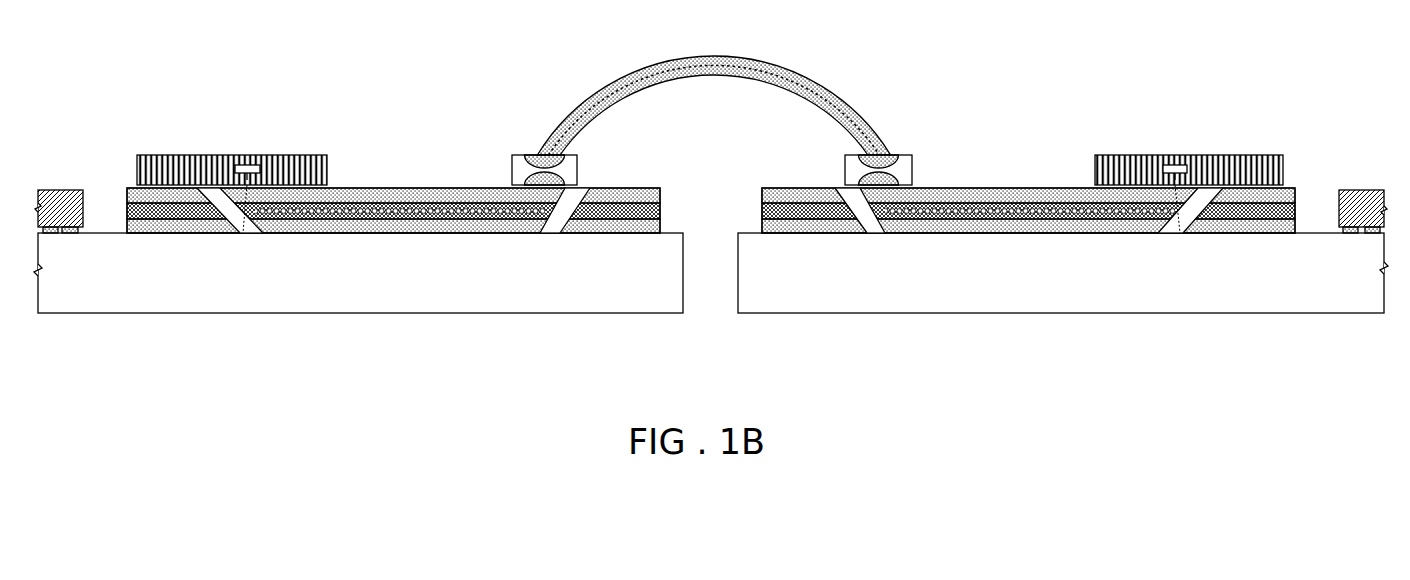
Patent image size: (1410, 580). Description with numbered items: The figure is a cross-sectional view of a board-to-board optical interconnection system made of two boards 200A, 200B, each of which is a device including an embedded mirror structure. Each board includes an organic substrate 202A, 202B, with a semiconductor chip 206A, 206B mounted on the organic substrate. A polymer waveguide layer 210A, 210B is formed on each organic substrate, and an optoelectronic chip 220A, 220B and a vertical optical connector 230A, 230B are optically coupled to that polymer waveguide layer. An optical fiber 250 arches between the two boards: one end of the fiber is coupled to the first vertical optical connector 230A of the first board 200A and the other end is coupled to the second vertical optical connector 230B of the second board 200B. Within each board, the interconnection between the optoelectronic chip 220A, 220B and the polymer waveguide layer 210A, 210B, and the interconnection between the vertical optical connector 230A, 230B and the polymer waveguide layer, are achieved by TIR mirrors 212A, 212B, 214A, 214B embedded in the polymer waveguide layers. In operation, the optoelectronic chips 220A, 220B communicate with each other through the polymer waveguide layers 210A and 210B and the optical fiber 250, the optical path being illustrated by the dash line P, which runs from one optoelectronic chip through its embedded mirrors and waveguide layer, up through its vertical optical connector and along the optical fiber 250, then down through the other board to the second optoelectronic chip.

The first board 200A is at (446, 88).
The second board 200B is at (1303, 88).
The organic substrate 202A is at (358, 273).
The organic substrate 202B is at (1063, 273).
The semiconductor chip 206A is at (83, 151).
The semiconductor chip 206B is at (1357, 190).
The polymer waveguide layer 210A is at (393, 253).
The polymer waveguide layer 210B is at (1028, 248).
The TIR mirror 212A is at (241, 233).
The TIR mirror 212B is at (1180, 233).
The TIR mirror 214A is at (545, 233).
The TIR mirror 214B is at (877, 233).
The optoelectronic chip 220A is at (242, 155).
The optoelectronic chip 220B is at (1203, 155).
The first vertical optical connector 230A is at (511, 170).
The second vertical optical connector 230B is at (913, 162).
The optical fiber 250 is at (758, 60).
The dash line P is at (465, 214).